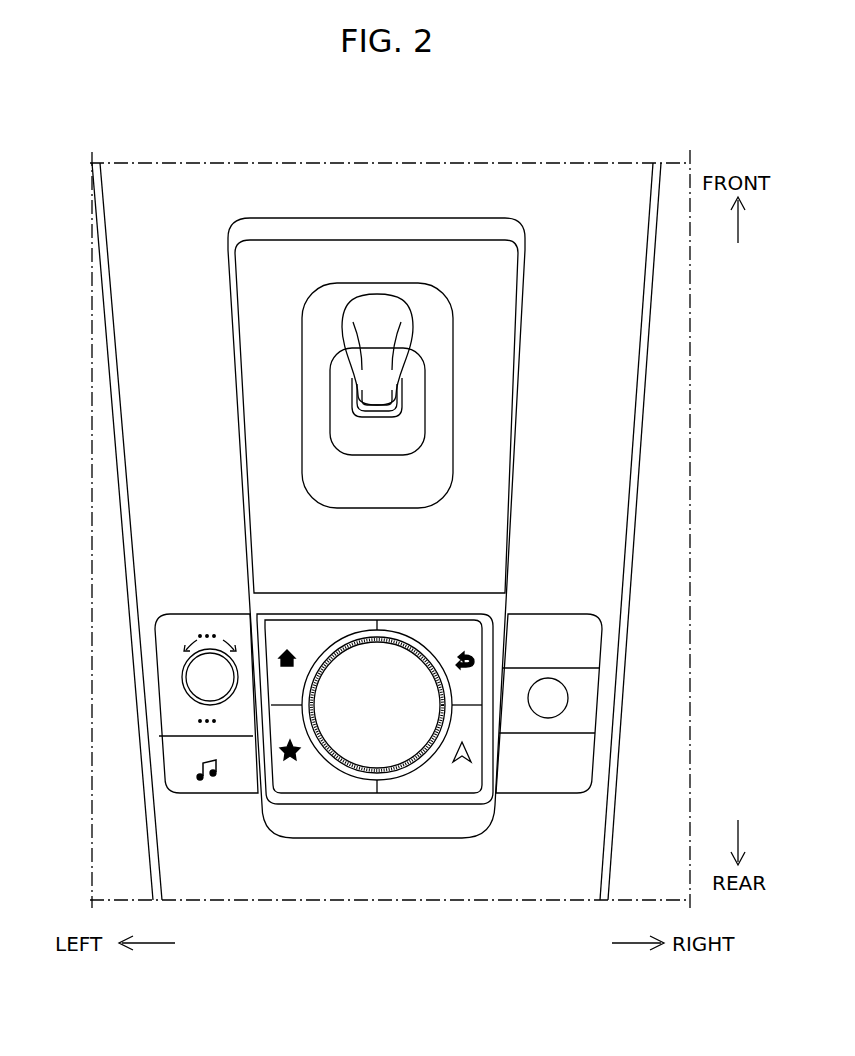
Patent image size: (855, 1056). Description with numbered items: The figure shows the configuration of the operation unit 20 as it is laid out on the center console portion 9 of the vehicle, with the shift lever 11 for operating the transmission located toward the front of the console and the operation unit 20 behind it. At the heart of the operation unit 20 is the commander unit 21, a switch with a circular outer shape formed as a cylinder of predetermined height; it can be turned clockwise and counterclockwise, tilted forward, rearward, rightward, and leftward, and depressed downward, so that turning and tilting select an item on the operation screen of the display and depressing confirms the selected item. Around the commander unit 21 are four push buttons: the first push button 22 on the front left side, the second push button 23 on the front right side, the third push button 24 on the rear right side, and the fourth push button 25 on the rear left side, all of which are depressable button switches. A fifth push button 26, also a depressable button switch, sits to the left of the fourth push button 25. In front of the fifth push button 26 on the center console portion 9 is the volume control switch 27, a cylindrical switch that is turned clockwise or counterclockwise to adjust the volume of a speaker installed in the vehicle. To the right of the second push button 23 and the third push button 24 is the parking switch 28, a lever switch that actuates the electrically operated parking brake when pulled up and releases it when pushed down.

The center console portion 9 is at (127, 487).
The shift lever 11 is at (408, 304).
The operation unit 20 is at (552, 581).
The commander unit 21 is at (392, 752).
The first push button 22 is at (308, 628).
The second push button 23 is at (430, 628).
The third push button 24 is at (445, 787).
The fourth push button 25 is at (312, 787).
The fifth push button 26 is at (215, 793).
The volume control switch 27 is at (182, 678).
The parking switch 28 is at (600, 688).